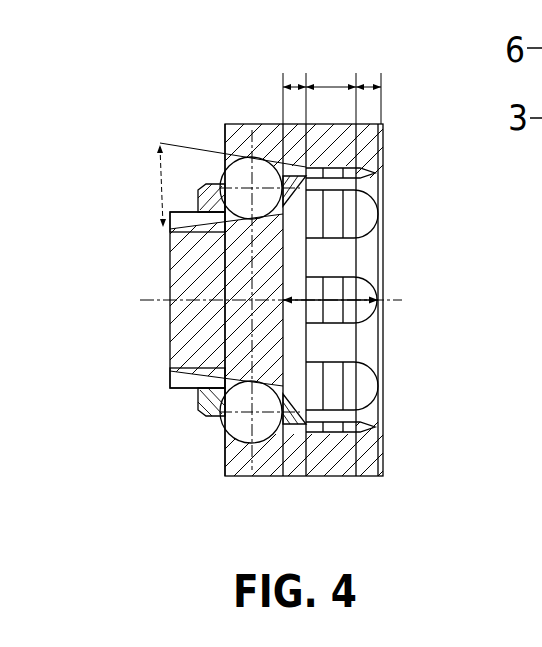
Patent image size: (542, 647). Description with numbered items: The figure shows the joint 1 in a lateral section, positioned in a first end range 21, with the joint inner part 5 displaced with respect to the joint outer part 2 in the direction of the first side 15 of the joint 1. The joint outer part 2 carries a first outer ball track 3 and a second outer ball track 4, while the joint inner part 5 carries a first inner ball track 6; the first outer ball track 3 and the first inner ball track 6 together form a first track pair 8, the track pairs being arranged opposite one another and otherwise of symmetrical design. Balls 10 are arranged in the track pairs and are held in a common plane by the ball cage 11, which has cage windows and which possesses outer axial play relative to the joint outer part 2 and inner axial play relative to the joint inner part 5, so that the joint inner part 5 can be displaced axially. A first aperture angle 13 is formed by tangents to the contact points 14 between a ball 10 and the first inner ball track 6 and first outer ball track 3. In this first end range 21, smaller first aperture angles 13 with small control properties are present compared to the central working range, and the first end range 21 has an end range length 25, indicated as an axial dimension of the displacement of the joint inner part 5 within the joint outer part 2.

The joint 1 is at (326, 266).
The joint outer part 2 is at (271, 326).
The first outer ball track 3 is at (405, 462).
The second outer ball track 4 is at (366, 222).
The joint inner part 5 is at (271, 300).
The first inner ball track 6 is at (196, 238).
The first track pair 8 is at (283, 213).
The ball 10 is at (240, 172).
The ball cage 11 is at (218, 418).
The first aperture angle 13 is at (208, 185).
The contact point 14 is at (256, 162).
The first side 15 is at (236, 325).
The first end range 21 is at (277, 62).
The end range length 25 is at (342, 62).